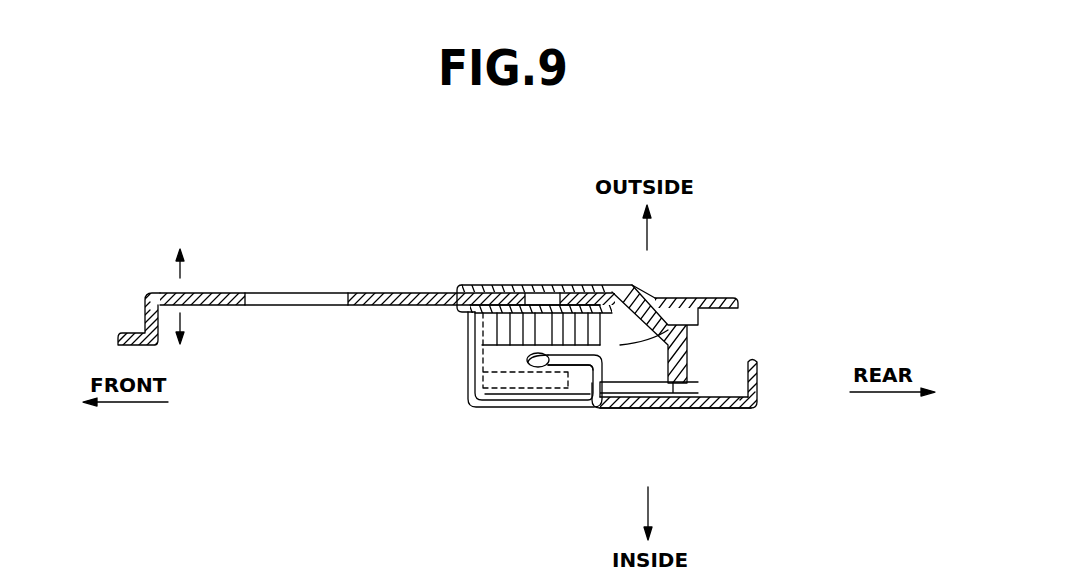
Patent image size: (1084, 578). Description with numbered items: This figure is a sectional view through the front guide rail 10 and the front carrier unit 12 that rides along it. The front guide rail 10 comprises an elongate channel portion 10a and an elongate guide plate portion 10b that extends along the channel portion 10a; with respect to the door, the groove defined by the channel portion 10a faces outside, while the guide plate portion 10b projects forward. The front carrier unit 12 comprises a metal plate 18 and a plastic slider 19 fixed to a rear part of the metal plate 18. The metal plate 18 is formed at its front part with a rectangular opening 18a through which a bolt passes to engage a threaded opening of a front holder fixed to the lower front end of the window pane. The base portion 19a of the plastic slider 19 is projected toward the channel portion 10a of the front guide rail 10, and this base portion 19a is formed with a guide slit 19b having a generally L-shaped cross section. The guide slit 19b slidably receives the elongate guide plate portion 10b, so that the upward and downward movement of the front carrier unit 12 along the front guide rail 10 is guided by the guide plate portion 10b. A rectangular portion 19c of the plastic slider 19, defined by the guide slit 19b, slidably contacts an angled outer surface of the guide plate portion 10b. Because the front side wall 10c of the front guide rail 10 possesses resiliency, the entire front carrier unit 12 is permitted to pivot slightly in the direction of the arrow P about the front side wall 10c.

The front guide rail 10 is at (760, 373).
The channel portion 10a is at (700, 410).
The guide plate portion 10b is at (546, 368).
The front side wall 10c is at (622, 380).
The front carrier unit 12 is at (484, 285).
The metal plate 18 is at (388, 292).
The rectangular opening 18a is at (246, 300).
The plastic slider 19 is at (466, 394).
The base portion 19a is at (652, 298).
The guide slit 19b is at (528, 364).
The rectangular portion 19c is at (565, 368).
The arrow P is at (183, 316).